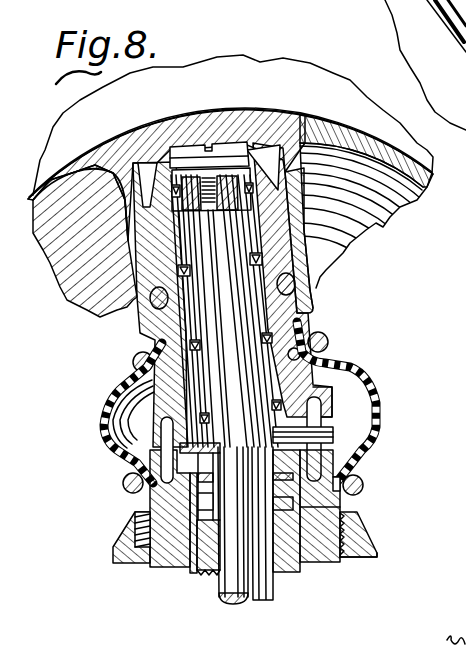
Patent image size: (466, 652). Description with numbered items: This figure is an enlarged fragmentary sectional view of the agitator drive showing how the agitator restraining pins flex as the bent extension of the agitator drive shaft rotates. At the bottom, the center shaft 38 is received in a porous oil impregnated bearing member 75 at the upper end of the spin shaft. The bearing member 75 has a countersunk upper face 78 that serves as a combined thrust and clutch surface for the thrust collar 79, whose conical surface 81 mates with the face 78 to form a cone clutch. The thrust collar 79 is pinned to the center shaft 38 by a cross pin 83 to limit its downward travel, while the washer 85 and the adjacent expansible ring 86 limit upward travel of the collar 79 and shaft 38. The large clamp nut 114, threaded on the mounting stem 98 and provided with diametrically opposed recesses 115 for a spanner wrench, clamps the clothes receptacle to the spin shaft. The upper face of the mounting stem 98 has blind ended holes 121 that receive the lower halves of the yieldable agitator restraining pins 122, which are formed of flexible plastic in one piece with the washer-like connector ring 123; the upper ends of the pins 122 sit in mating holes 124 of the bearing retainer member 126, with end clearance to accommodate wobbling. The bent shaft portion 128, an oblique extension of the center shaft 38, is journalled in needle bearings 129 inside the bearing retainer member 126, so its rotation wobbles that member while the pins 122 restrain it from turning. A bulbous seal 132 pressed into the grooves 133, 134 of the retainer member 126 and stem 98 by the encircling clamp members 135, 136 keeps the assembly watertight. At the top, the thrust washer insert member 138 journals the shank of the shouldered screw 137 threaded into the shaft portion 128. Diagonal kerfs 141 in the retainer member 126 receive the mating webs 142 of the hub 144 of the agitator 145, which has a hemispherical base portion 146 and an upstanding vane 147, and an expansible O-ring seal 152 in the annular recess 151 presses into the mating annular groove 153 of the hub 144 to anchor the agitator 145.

The upstanding vane 147 is at (262, 65).
The agitator 145 is at (335, 108).
The mating webs or fillets 142 is at (155, 162).
The shouldered screw 137 is at (220, 144).
The thrust washer insert member 138 is at (251, 148).
The hemispherical base portion 146 is at (413, 177).
The diagonal kerfs 141 is at (133, 238).
The annular recess 151 is at (99, 317).
The expansible O-ring seal 152 is at (137, 320).
The hub 144 is at (300, 238).
The mating annular groove 153 is at (246, 306).
The bent shaft portion 128 is at (296, 283).
The bearing retainer member 126 is at (299, 326).
The encircling clamp member 135 is at (329, 340).
The groove 133 is at (301, 355).
The bulbous seal 132 is at (372, 380).
The groove 134 is at (150, 502).
The mating holes 124 is at (322, 404).
The yieldable agitator restraining pins 122 is at (329, 426).
The connector ring 123 is at (324, 436).
The blind ended holes 121 is at (341, 473).
The encircling clamp member 136 is at (365, 486).
The cross pin 83 is at (343, 506).
The diametrically opposed recesses 115 is at (366, 539).
The clamp nut 114 is at (379, 556).
The mounting stem 98 is at (331, 535).
The porous oil impregnated bearing member 75 is at (287, 576).
The center shaft 38 is at (218, 594).
The countersunk upper face 78 is at (195, 536).
The conical surface 81 is at (199, 531).
The washer 85 is at (204, 490).
The thrust collar 79 is at (208, 478).
The expansible ring 86 is at (198, 466).
The needle bearings 129 is at (206, 398).